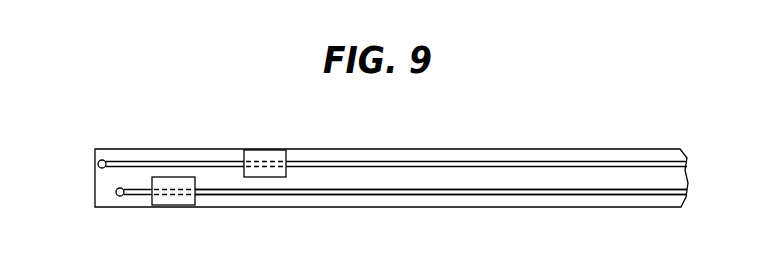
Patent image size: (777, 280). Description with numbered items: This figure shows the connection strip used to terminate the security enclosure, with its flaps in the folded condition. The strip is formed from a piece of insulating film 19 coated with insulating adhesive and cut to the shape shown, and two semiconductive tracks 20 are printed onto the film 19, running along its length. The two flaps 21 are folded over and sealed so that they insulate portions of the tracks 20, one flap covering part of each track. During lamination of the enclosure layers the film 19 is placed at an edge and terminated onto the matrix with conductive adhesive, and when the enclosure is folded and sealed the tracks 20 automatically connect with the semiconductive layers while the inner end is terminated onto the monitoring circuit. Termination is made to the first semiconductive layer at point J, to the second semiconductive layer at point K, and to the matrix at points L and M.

The insulating film 19 is at (402, 160).
The semiconductive tracks 20 is at (472, 193).
The flaps 21 is at (262, 156).
The termination point to the second semiconductive layer K is at (177, 157).
The termination point to the matrix L is at (98, 164).
The termination point to the matrix M is at (120, 196).
The termination point to the first semiconductive layer J is at (250, 198).